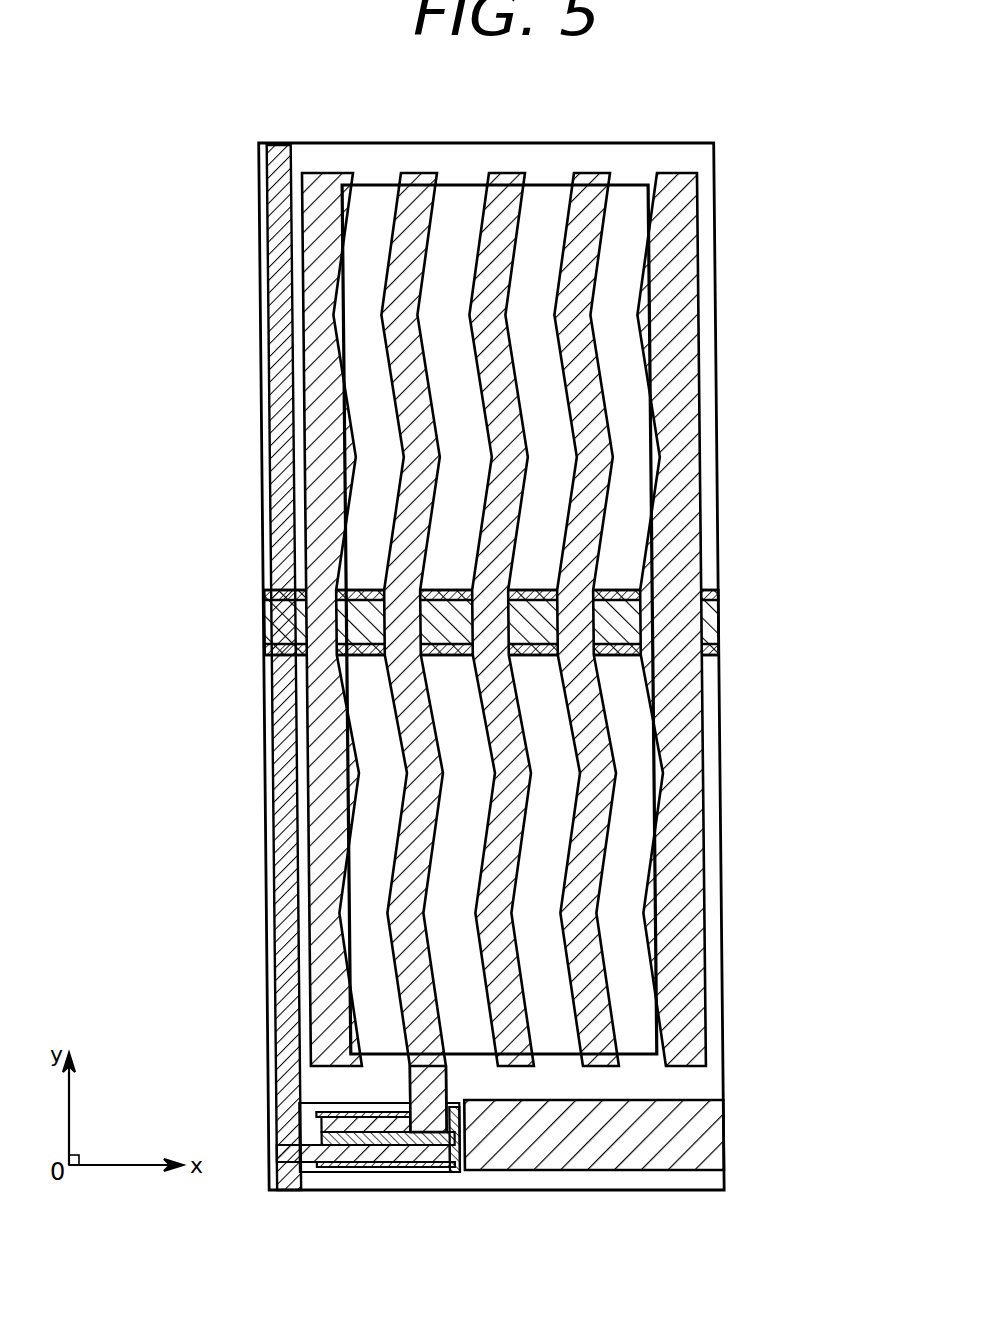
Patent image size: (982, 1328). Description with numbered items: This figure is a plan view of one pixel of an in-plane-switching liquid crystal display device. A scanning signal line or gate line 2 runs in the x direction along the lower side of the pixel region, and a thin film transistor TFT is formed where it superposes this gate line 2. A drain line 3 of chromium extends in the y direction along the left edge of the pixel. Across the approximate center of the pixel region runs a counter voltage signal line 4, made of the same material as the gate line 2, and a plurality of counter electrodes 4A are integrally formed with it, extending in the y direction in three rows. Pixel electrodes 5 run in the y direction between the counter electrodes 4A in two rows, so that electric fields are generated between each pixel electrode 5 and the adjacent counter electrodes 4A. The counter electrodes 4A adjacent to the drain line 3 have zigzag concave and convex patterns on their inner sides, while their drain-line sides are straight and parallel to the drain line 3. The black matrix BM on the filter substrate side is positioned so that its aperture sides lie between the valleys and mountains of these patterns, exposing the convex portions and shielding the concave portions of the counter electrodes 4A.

The scanning signal line (gate line) 2 is at (705, 1125).
The drain line 3 is at (270, 858).
The counter voltage signal line 4 is at (705, 627).
The counter electrode 4A is at (677, 287).
The pixel electrode 5 is at (410, 712).
The black matrix BM is at (645, 445).
The thin film transistor TFT is at (380, 1179).